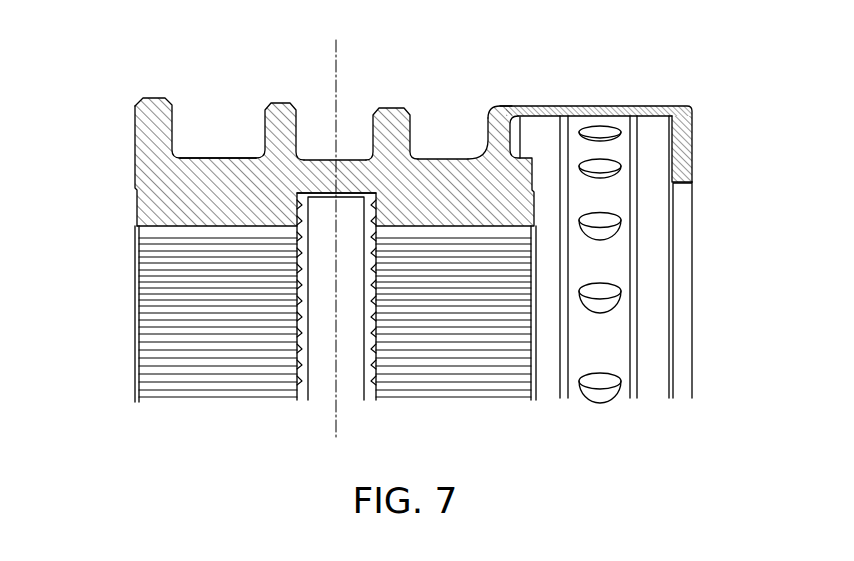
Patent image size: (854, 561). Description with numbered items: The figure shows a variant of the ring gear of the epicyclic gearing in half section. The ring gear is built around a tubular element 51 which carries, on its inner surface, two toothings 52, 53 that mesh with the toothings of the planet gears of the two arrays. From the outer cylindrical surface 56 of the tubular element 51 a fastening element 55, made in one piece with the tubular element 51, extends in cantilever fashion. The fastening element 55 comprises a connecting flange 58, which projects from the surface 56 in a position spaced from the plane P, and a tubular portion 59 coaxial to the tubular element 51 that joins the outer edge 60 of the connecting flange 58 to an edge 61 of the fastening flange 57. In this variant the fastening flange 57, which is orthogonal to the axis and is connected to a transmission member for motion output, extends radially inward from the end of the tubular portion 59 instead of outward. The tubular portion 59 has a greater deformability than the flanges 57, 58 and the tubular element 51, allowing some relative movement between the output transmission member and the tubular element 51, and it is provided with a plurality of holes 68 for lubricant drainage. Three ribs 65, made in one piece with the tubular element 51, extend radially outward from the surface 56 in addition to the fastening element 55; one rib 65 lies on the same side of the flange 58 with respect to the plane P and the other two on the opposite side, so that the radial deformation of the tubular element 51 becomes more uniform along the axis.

The tubular element 51 is at (137, 168).
The toothing 52 is at (499, 383).
The toothing 53 is at (150, 322).
The fastening element 55 is at (672, 98).
The outer cylindrical surface 56 is at (220, 148).
The fastening flange 57 is at (694, 155).
The connecting flange 58 is at (486, 130).
The tubular portion 59 is at (610, 106).
The outer edge 60 is at (515, 106).
The edge 61 is at (692, 108).
The rib 65 is at (152, 98).
The holes 68 is at (620, 270).
The plane P is at (344, 48).